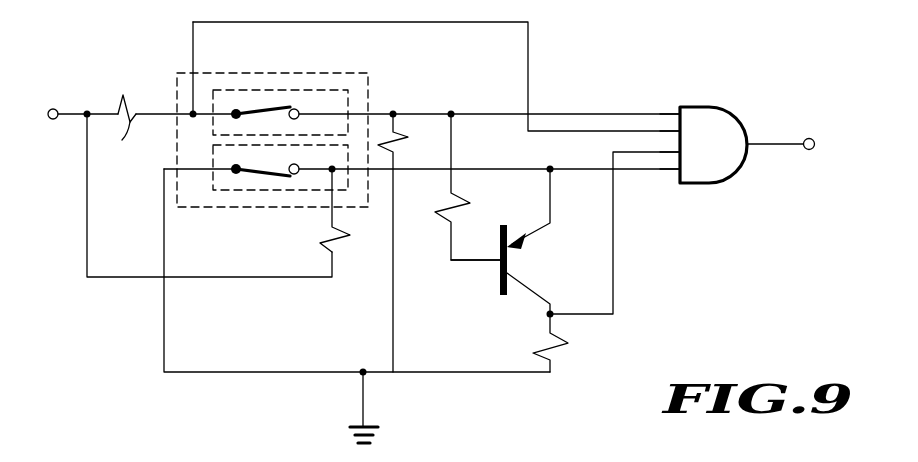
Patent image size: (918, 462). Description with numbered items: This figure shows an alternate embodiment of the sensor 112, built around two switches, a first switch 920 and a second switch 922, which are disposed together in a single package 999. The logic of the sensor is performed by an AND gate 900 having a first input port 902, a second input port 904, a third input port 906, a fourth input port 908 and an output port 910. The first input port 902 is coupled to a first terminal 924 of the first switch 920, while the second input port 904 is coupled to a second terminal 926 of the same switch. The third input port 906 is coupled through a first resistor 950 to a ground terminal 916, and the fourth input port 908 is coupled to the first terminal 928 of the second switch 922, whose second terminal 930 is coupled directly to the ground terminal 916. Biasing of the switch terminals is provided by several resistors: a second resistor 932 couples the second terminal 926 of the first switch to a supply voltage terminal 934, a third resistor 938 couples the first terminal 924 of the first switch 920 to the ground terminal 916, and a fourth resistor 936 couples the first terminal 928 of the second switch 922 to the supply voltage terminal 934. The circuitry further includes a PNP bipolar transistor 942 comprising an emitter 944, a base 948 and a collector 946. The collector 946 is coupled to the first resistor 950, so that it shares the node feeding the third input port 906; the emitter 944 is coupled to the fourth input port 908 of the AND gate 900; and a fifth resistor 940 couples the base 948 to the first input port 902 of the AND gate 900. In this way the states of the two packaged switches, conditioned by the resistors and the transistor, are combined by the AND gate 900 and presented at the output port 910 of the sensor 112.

The sensor 112 is at (455, 231).
The AND gate 900 is at (743, 125).
The first input port 902 is at (678, 110).
The second input port 904 is at (677, 128).
The third input port 906 is at (672, 157).
The fourth input port 908 is at (674, 172).
The output port 910 is at (813, 138).
The ground terminal 916 is at (380, 431).
The first switch 920 is at (345, 89).
The second switch 922 is at (256, 192).
The first terminal of the first switch 924 is at (295, 108).
The second terminal of the first switch 926 is at (233, 108).
The first terminal of the second switch 928 is at (295, 175).
The second terminal of the second switch 930 is at (236, 175).
The second resistor 932 is at (123, 135).
The supply voltage terminal 934 is at (53, 108).
The fourth resistor 936 is at (340, 237).
The third resistor 938 is at (405, 137).
The fifth resistor 940 is at (460, 200).
The PNP bipolar transistor 942 is at (522, 262).
The emitter 944 is at (550, 223).
The collector 946 is at (550, 300).
The base 948 is at (478, 262).
The first resistor 950 is at (558, 348).
The single package 999 is at (177, 77).